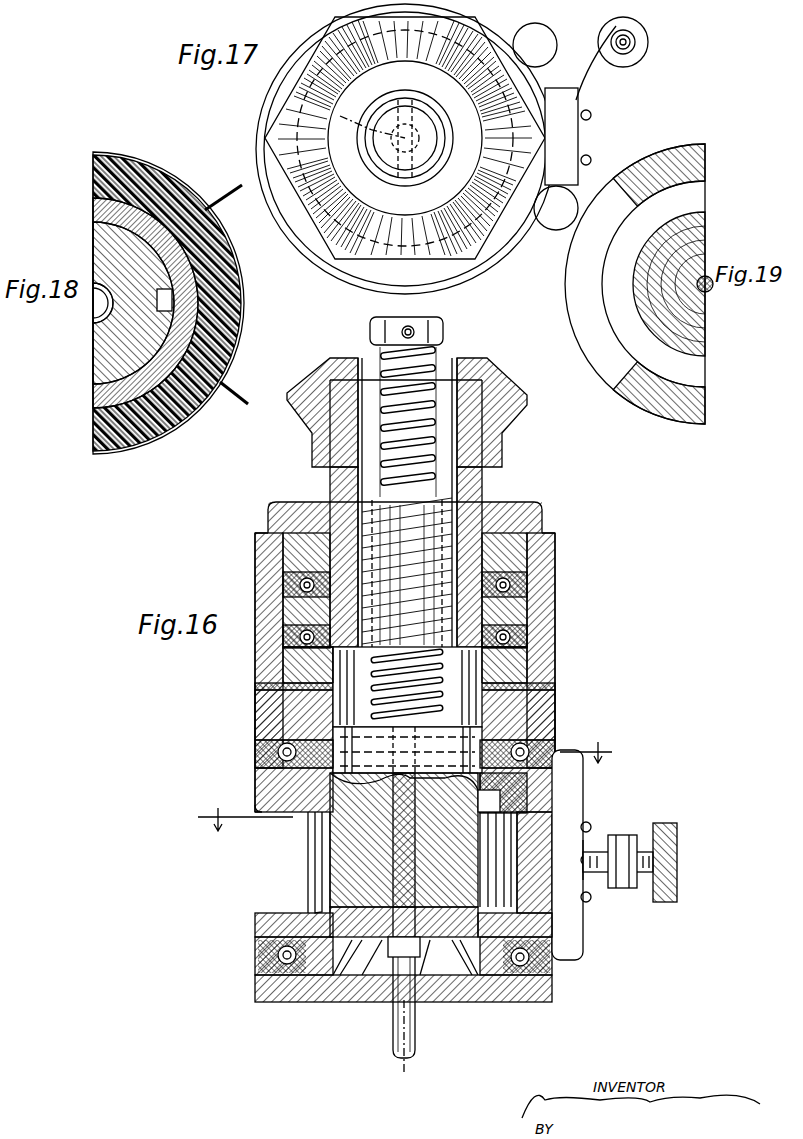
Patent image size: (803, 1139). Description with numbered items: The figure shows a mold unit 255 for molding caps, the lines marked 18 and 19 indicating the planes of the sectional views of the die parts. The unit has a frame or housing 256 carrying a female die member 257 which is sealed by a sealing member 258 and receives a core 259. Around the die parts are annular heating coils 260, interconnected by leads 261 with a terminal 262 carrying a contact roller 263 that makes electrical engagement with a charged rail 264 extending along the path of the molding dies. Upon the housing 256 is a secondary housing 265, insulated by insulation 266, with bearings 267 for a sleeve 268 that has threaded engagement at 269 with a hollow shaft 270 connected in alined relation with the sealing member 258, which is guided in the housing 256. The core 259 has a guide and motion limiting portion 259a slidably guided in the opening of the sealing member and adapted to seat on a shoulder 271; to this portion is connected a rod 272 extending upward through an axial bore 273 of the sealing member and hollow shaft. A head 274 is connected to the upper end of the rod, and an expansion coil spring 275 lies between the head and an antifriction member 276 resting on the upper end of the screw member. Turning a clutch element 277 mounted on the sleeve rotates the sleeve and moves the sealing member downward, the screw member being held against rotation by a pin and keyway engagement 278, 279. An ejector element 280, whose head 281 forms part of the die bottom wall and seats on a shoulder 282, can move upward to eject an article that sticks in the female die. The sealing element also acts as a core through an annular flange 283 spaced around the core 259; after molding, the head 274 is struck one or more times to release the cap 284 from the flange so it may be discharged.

In FIG. 16, the mold unit 255 is at (202, 688).
In FIG. 18, the frame or housing 256 is at (93, 212).
In FIG. 19, the frame or housing 256 is at (683, 164).
In FIG. 16, the frame or housing 256 is at (560, 932).
In FIG. 16, the female die member 257 is at (372, 970).
In FIG. 18, the sealing member 258 is at (97, 334).
In FIG. 19, the sealing member 258 is at (693, 222).
In FIG. 16, the sealing member 258 is at (400, 874).
In FIG. 16, the core 259 is at (392, 960).
In FIG. 16, the guide and motion limiting portion 259a is at (330, 896).
In FIG. 18, the annular heating coils 260 is at (166, 168).
In FIG. 16, the annular heating coils 260 is at (278, 754).
In FIG. 17, the leads 261 is at (556, 230).
In FIG. 16, the leads 261 is at (588, 770).
In FIG. 17, the terminal 262 is at (620, 84).
In FIG. 16, the terminal 262 is at (602, 882).
In FIG. 17, the contact roller 263 is at (650, 42).
In FIG. 16, the contact roller 263 is at (622, 850).
In FIG. 16, the charged rail 264 is at (678, 846).
In FIG. 17, the secondary housing 265 is at (336, 42).
In FIG. 16, the secondary housing 265 is at (548, 594).
In FIG. 16, the insulation 266 is at (556, 694).
In FIG. 16, the bearings 267 is at (545, 582).
In FIG. 16, the sleeve 268 is at (484, 490).
In FIG. 16, the threaded engagement 269 is at (548, 538).
In FIG. 16, the hollow shaft 270 is at (340, 720).
In FIG. 16, the shoulder 271 is at (320, 846).
In FIG. 17, the rod 272 is at (340, 116).
In FIG. 18, the rod 272 is at (93, 305).
In FIG. 19, the rod 272 is at (712, 288).
In FIG. 16, the rod 272 is at (380, 782).
In FIG. 18, the axial bore 273 is at (100, 291).
In FIG. 16, the axial bore 273 is at (400, 800).
In FIG. 17, the head 274 is at (403, 118).
In FIG. 16, the head 274 is at (370, 332).
In FIG. 16, the expansion coil spring 275 is at (346, 416).
In FIG. 16, the antifriction member 276 is at (356, 482).
In FIG. 17, the clutch element 277 is at (490, 95).
In FIG. 16, the clutch element 277 is at (322, 365).
In FIG. 18, the pin 278 is at (244, 268).
In FIG. 16, the pin 278 is at (533, 784).
In FIG. 18, the keyway 279 is at (240, 324).
In FIG. 16, the keyway 279 is at (534, 841).
In FIG. 16, the ejector element 280 is at (418, 1055).
In FIG. 16, the head 281 is at (412, 962).
In FIG. 16, the shoulder 282 is at (424, 990).
In FIG. 16, the annular flange 283 is at (352, 968).
In FIG. 16, the cap 284 is at (330, 975).
In FIG. 16, the section line 18 is at (586, 742).
In FIG. 16, the section line 19 is at (215, 812).